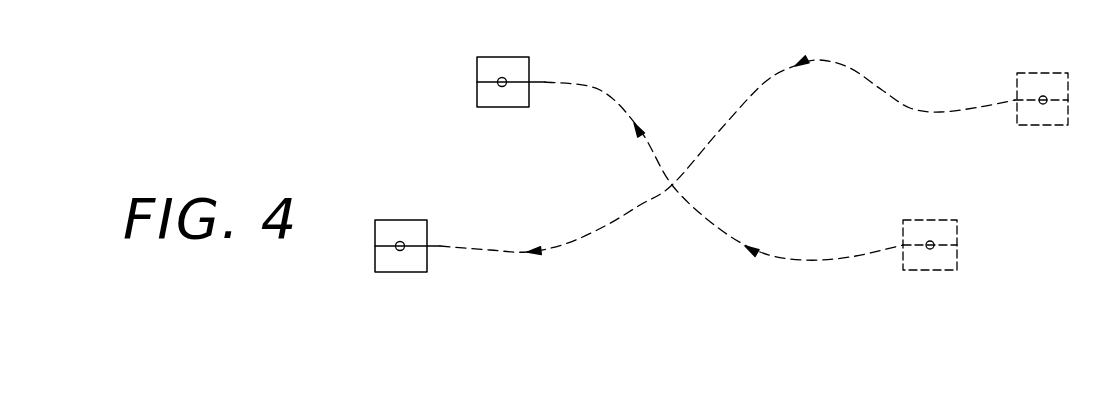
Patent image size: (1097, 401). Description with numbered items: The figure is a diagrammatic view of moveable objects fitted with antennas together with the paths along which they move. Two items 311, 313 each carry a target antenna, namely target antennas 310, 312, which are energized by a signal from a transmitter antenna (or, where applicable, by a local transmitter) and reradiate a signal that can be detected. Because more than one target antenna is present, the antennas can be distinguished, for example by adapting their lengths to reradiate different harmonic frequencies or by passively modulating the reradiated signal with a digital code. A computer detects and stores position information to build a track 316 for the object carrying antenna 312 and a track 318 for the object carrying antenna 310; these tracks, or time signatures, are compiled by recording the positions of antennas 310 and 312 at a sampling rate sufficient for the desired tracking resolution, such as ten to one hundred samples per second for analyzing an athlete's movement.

The target antenna 310 is at (517, 82).
The item 311 is at (477, 67).
The target antenna 312 is at (387, 245).
The item 313 is at (397, 272).
The track 316 is at (882, 92).
The track 318 is at (717, 227).